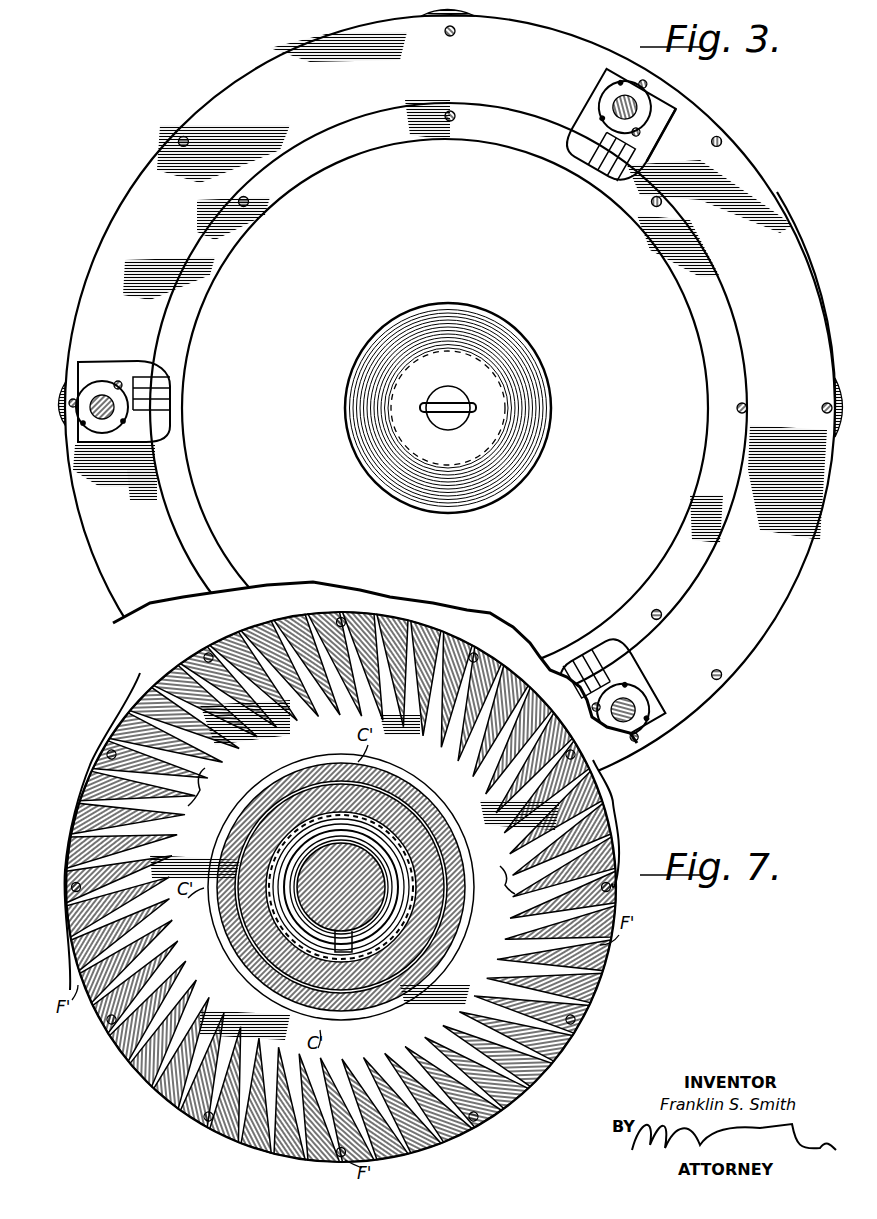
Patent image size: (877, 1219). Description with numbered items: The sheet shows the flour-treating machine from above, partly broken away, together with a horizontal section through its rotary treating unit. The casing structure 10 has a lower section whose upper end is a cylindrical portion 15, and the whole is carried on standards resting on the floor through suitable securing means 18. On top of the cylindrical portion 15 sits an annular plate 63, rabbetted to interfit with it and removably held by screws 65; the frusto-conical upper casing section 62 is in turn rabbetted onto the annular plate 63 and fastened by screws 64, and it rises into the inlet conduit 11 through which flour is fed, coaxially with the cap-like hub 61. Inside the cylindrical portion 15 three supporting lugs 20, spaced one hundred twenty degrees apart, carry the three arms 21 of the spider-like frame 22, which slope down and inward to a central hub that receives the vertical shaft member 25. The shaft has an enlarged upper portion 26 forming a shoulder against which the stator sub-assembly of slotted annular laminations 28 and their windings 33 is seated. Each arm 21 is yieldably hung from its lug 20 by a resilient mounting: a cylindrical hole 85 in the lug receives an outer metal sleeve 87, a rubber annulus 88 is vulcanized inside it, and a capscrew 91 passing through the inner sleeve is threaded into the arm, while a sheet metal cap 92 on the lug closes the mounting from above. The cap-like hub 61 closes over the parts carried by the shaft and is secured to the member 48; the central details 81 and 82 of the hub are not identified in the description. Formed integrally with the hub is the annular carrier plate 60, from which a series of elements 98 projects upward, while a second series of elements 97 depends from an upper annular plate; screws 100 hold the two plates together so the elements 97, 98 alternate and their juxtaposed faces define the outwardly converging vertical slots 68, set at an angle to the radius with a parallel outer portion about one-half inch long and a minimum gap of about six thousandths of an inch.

In FIG. 3, the casing structure 10 is at (763, 630).
In FIG. 3, the inlet conduit 11 is at (551, 398).
In FIG. 3, the cylindrical portion 15 is at (640, 80).
In FIG. 3, the supporting means 18 is at (466, 15).
In FIG. 3, the supporting lugs 20 is at (118, 432).
In FIG. 3, the arms 21 is at (170, 385).
In FIG. 3, the spider-like frame 22 is at (170, 409).
In FIG. 7, the shaft member 25 is at (336, 948).
In FIG. 7, the enlarged upper portion 26 is at (351, 950).
In FIG. 7, the laminations 28 is at (404, 934).
In FIG. 7, the stator windings 33 is at (296, 938).
In FIG. 7, the member 48 is at (446, 893).
In FIG. 7, the annular carrier plate 60 is at (418, 778).
In FIG. 3, the cap-like hub 61 is at (520, 355).
In FIG. 3, the upper casing section 62 is at (604, 478).
In FIG. 3, the annular plate 63 is at (800, 282).
In FIG. 3, the screws 64 is at (245, 193).
In FIG. 3, the screws 65 is at (183, 130).
In FIG. 7, the slots 68 is at (518, 1138).
In FIG. 3, the center pin 81 is at (448, 430).
In FIG. 3, the slot 82 is at (468, 412).
In FIG. 3, the cylindrical hole 85 is at (148, 430).
In FIG. 3, the outer metal sleeve 87 is at (78, 420).
In FIG. 3, the rubber annulus 88 is at (96, 430).
In FIG. 3, the capscrew 91 is at (110, 392).
In FIG. 3, the sheet metal cap 92 is at (108, 378).
In FIG. 7, the elements 97 is at (204, 771).
In FIG. 7, the elements 98 is at (66, 838).
In FIG. 7, the screws 100 is at (345, 620).